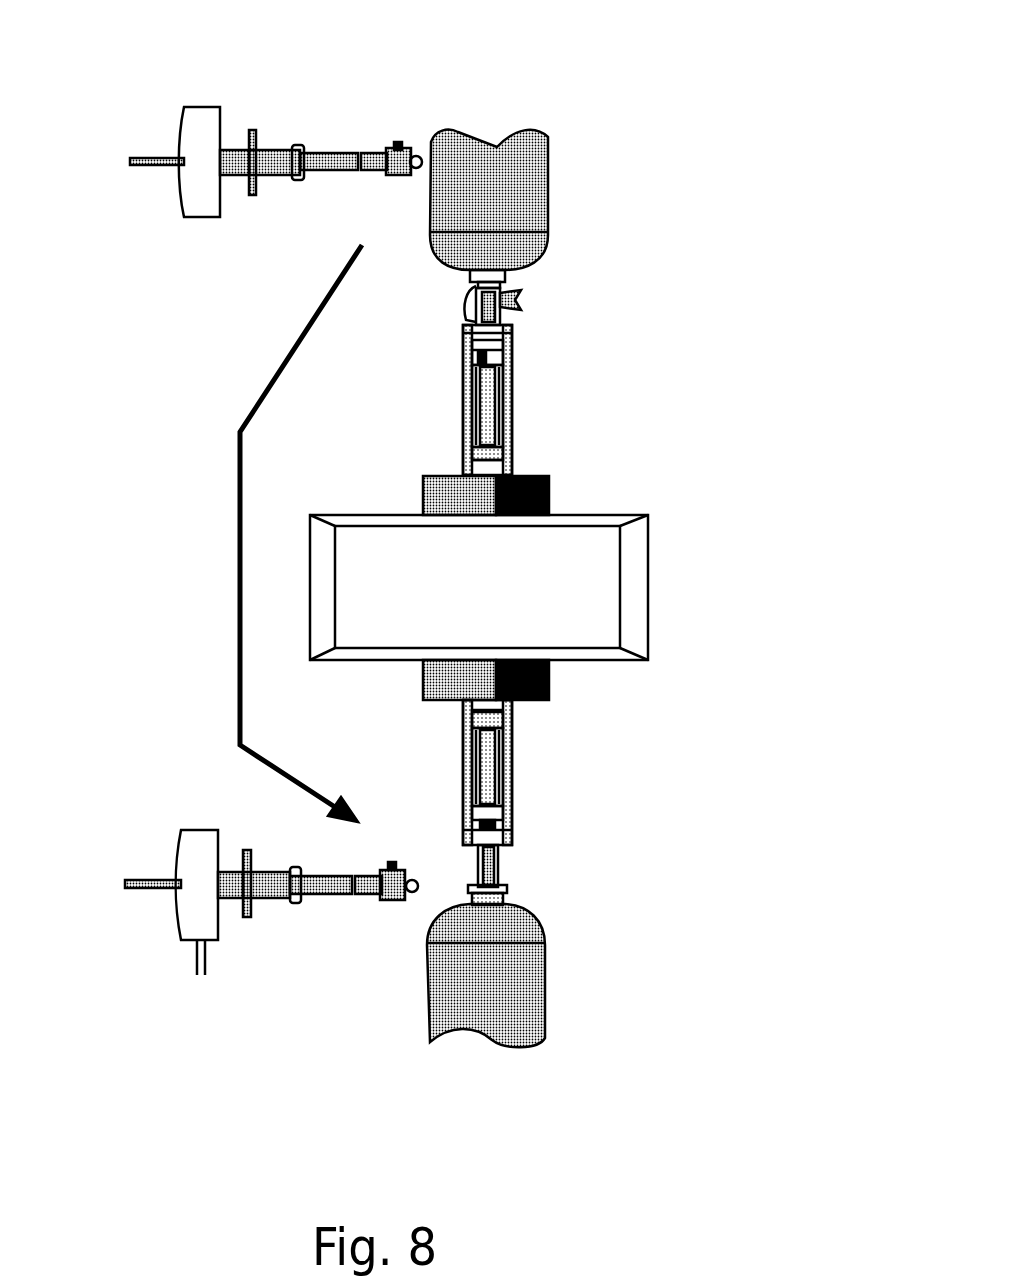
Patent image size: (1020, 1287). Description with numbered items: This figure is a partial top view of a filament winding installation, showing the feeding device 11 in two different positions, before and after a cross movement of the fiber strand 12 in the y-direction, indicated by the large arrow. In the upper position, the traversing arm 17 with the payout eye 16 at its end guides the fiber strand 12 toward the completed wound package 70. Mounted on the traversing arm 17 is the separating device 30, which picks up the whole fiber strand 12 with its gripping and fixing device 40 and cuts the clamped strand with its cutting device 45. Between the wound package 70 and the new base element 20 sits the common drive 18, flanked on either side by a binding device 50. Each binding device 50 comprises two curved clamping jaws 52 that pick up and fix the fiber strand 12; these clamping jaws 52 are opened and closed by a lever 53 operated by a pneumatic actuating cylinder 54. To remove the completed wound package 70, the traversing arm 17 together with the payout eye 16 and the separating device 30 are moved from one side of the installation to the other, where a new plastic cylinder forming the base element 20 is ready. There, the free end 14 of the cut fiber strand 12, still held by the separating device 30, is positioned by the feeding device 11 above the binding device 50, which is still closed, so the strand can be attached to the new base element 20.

The feeding device 11 is at (197, 92).
The fiber strand 12 is at (148, 160).
The free end 14 is at (516, 301).
The payout eye 16 is at (298, 182).
The traversing arm 17 is at (272, 172).
The common drive 18 is at (585, 584).
The base element 20 is at (528, 997).
The separating device 30 is at (348, 122).
The gripping and fixing device 40 is at (398, 145).
The cutting device 45 is at (422, 155).
The binding device 50 is at (565, 328).
The clamping jaws 52 is at (503, 298).
The lever 53 is at (483, 342).
The pneumatic actuating cylinder 54 is at (496, 406).
The wound package 70 is at (538, 187).